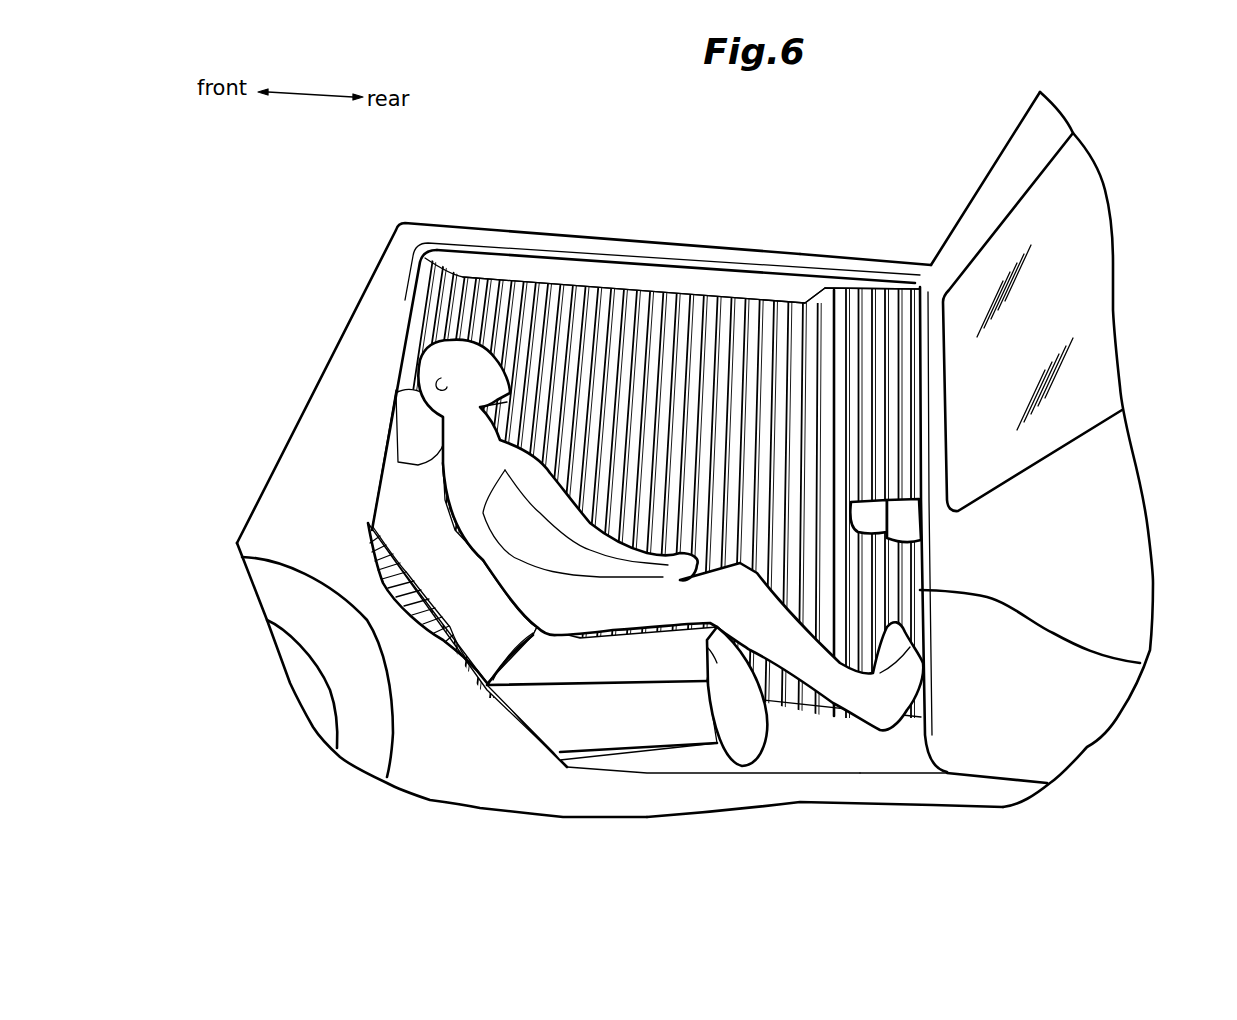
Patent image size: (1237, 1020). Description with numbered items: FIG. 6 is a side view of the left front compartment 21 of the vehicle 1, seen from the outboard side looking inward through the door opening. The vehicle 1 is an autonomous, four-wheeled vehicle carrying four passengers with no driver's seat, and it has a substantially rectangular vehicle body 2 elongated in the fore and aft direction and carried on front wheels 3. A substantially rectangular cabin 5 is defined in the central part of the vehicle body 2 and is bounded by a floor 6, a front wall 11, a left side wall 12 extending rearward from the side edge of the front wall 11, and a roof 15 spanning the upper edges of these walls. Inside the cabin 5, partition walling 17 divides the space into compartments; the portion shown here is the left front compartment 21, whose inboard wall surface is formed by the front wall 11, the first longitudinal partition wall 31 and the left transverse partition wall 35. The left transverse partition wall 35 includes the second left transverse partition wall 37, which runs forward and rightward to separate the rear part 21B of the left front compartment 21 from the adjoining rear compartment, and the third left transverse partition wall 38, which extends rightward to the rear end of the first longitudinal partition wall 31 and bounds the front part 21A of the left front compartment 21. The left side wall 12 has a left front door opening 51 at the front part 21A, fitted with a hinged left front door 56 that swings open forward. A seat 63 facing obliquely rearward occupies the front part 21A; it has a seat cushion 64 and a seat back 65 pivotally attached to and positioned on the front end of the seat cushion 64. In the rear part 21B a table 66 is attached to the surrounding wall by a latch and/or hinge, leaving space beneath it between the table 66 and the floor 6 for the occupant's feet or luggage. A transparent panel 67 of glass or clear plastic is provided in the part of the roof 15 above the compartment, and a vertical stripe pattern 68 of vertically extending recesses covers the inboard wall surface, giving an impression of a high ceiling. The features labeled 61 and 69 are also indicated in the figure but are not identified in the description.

The vehicle 1 is at (489, 178).
The vehicle body 2 is at (368, 293).
The front wheels 3 is at (268, 588).
The cabin 5 is at (748, 308).
The floor 6 is at (823, 750).
The front wall 11 is at (447, 267).
The left side wall 12 is at (875, 265).
The roof 15 is at (612, 237).
The partition walling 17 is at (533, 296).
The left front compartment 21 is at (663, 767).
The front part of the left front compartment 21A is at (593, 762).
The rear part of the left front compartment 21B is at (913, 750).
The first longitudinal partition wall 31 is at (647, 330).
The left transverse partition wall 35 is at (862, 308).
The second left transverse partition wall 37 is at (900, 303).
The third left transverse partition wall 38 is at (820, 320).
The left front door opening 51 is at (722, 266).
The left front door 56 is at (1122, 472).
The roof side portion 61 is at (1083, 180).
The seat 63 is at (399, 511).
The seat cushion 64 is at (660, 660).
The seat back 65 is at (412, 552).
The table 66 is at (913, 523).
The transparent panel 67 is at (587, 270).
The vertical stripe pattern 68 is at (900, 397).
The body side panel 69 is at (1140, 663).